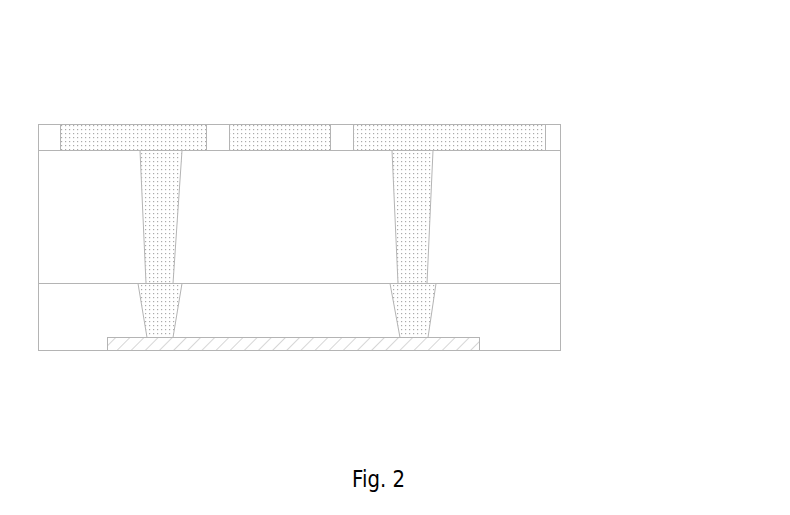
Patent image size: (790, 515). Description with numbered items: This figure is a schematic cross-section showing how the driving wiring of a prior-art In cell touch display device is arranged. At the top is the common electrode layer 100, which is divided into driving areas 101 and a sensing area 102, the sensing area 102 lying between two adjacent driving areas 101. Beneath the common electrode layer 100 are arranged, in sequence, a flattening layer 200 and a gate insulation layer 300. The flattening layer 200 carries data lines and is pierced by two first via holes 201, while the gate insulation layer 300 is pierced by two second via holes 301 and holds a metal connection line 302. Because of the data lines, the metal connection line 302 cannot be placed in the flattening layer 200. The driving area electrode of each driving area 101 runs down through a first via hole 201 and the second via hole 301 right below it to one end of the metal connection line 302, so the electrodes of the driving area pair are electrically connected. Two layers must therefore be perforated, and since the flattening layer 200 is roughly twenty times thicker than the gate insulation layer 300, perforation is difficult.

The common electrode layer 100 is at (562, 138).
The driving area 101 is at (303, 86).
The sensing area 102 is at (292, 86).
The flattening layer 200 is at (562, 226).
The first via hole 201 is at (432, 182).
The gate insulation layer 300 is at (562, 338).
The second via hole 301 is at (433, 306).
The metal connection line 302 is at (421, 347).